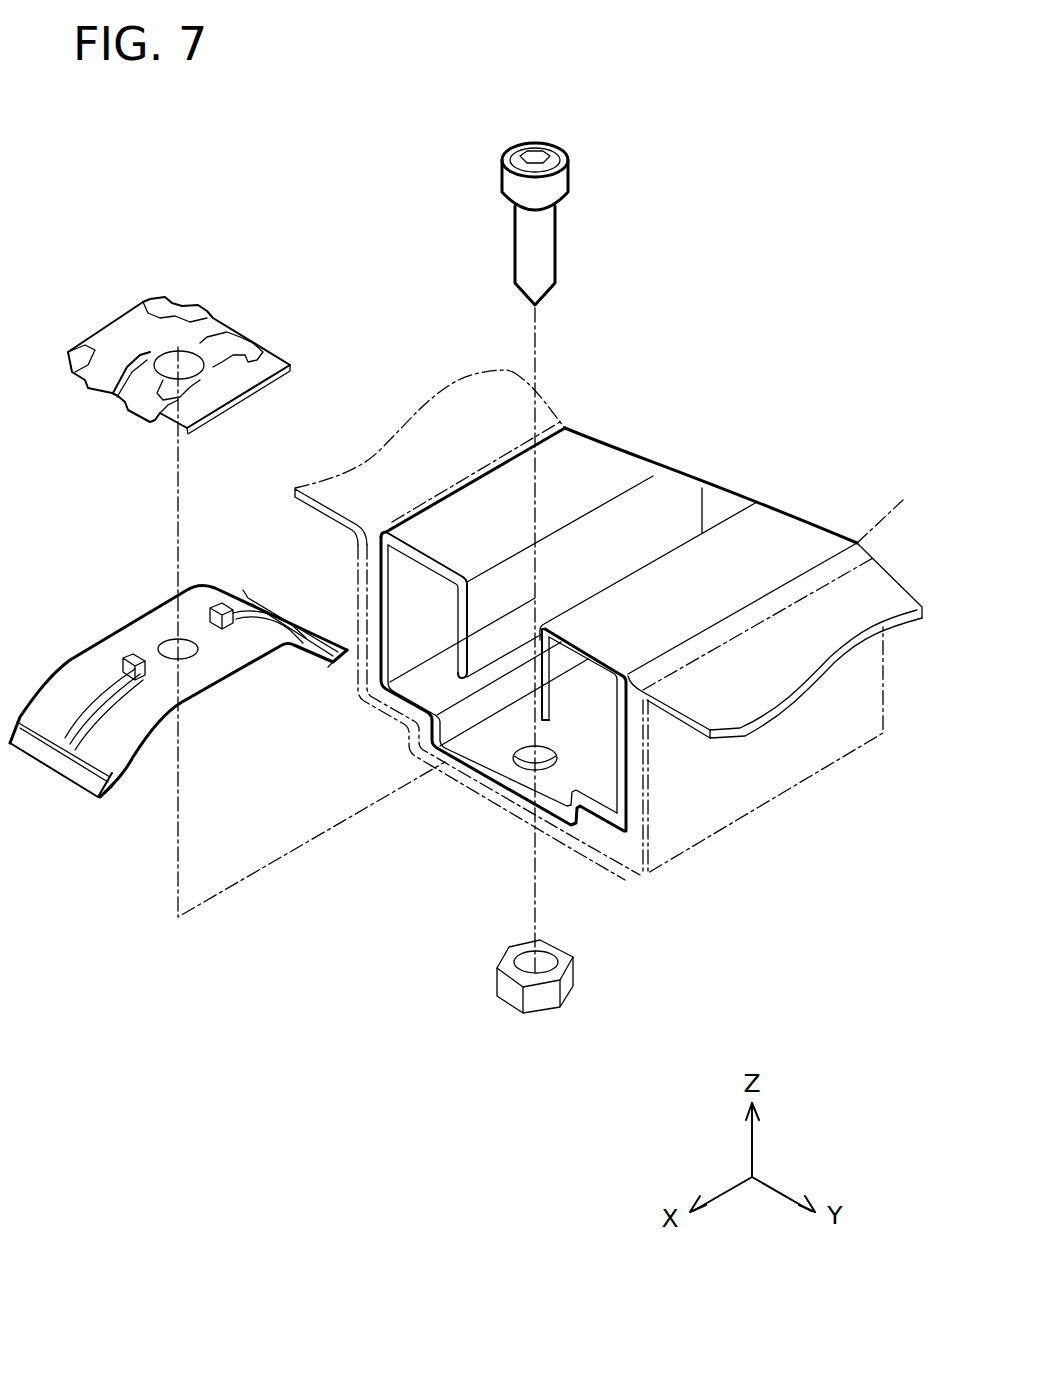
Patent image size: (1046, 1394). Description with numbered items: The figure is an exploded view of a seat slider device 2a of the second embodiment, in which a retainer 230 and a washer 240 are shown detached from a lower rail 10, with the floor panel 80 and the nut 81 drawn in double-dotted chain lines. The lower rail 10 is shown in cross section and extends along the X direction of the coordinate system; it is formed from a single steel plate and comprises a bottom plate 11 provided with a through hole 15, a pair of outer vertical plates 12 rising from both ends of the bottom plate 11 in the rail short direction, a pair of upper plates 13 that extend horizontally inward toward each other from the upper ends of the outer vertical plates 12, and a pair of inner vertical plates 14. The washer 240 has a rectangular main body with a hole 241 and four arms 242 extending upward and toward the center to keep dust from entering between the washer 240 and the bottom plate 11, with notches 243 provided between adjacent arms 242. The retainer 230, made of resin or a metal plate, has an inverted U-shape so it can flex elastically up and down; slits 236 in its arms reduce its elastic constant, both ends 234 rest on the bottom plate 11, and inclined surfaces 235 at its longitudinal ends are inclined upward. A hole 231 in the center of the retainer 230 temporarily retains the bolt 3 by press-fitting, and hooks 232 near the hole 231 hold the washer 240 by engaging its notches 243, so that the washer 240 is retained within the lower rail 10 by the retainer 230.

The seat slider device 2a is at (774, 186).
The bolt 3 is at (545, 227).
The lower rail 10 is at (635, 380).
The bottom plate 11 is at (540, 780).
The outer vertical plate 12 is at (383, 660).
The upper plate 13 is at (600, 477).
The inner vertical plate 14 is at (463, 617).
The through hole 15 is at (525, 752).
The floor panel 80 is at (857, 588).
The nut 81 is at (510, 995).
The retainer 230 is at (80, 677).
The hole 231 is at (168, 640).
The hook 232 is at (222, 606).
The end 234 is at (333, 664).
The inclined surface 235 is at (327, 633).
The slit 236 is at (237, 605).
The washer 240 is at (227, 378).
The hole 241 is at (163, 352).
The arm 242 is at (183, 306).
The notch 243 is at (127, 397).